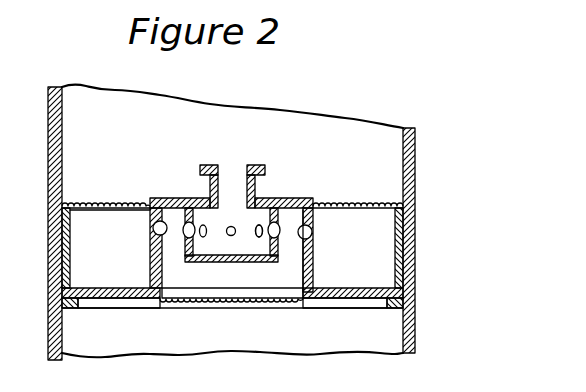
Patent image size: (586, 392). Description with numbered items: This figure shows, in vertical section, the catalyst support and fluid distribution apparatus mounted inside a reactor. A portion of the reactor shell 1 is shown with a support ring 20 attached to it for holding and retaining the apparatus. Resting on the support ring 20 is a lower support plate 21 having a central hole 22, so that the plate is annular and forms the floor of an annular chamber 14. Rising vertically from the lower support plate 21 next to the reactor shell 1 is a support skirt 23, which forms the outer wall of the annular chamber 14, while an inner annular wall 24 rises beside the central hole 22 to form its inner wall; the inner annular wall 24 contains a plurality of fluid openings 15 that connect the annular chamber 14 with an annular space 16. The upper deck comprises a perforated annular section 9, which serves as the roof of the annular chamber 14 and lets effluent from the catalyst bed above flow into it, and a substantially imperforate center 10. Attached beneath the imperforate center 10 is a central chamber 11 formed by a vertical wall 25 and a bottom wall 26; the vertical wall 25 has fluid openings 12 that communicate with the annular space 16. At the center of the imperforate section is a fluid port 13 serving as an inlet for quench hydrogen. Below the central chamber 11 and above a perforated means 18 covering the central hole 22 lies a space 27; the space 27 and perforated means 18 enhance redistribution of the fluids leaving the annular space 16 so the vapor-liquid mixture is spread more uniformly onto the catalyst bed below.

The reactor shell 1 is at (47, 113).
The perforated annular section 9 is at (100, 200).
The imperforate center 10 is at (157, 198).
The central chamber 11 is at (222, 253).
The fluid openings 12 is at (258, 228).
The fluid port 13 is at (218, 165).
The annular chamber 14 is at (127, 271).
The fluid openings 15 is at (312, 235).
The annular space 16 is at (288, 232).
The perforated means 18 is at (278, 304).
The support ring 20 is at (148, 308).
The lower support plate 21 is at (122, 295).
The central hole 22 is at (240, 292).
The support skirt 23 is at (70, 232).
The inner annular wall 24 is at (313, 267).
The vertical wall 25 is at (177, 198).
The bottom wall 26 is at (253, 263).
The space 27 is at (243, 285).